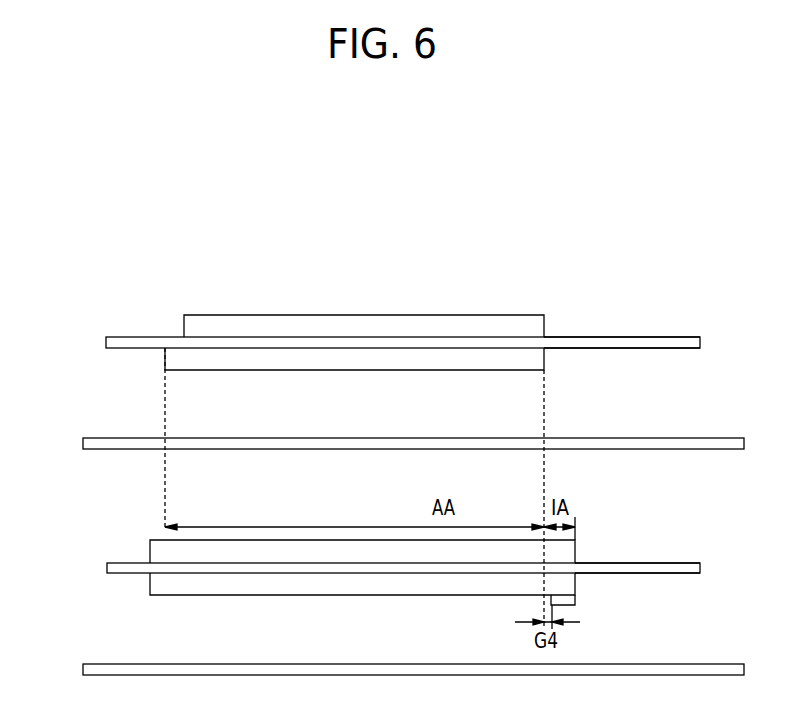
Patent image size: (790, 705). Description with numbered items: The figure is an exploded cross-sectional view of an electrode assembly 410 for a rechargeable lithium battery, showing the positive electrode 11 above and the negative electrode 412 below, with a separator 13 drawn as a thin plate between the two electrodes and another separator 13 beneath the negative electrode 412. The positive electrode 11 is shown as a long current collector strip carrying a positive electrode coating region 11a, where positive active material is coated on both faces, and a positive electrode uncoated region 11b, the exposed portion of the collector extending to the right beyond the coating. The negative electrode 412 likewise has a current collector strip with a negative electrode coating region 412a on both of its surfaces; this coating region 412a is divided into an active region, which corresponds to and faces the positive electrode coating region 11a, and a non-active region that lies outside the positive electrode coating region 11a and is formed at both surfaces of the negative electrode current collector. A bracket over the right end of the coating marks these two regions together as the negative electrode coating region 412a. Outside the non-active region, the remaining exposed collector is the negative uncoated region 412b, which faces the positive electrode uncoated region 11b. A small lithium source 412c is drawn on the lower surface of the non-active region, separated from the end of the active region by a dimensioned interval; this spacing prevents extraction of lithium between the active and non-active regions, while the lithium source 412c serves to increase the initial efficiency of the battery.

The electrode assembly 410 is at (387, 236).
The positive electrode 11 is at (88, 346).
The positive electrode coating region 11a is at (477, 357).
The positive electrode uncoated region 11b is at (607, 341).
The separator 13 is at (100, 441).
The negative electrode 412 is at (91, 572).
The negative electrode coating region 412a is at (572, 493).
The negative uncoated region 412b is at (680, 569).
The lithium source 412c is at (576, 599).